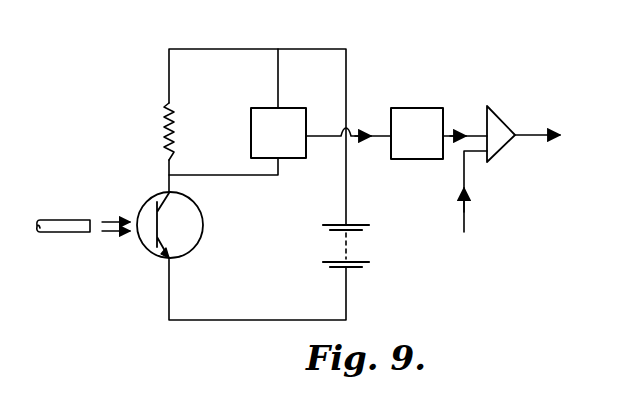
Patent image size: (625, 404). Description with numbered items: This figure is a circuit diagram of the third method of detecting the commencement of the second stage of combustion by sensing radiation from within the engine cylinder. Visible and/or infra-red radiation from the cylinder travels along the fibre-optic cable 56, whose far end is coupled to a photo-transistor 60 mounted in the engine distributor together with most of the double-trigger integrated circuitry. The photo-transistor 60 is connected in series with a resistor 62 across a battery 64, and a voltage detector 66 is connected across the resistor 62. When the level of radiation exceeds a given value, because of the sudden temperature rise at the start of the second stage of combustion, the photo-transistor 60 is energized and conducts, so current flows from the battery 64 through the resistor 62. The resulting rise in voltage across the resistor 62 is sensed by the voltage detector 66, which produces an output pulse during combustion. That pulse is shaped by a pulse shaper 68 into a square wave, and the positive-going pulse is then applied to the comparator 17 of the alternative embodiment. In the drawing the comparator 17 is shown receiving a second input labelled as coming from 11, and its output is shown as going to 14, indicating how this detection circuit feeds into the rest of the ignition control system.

The fibre-optic cable 56 is at (62, 221).
The photo-transistor 60 is at (150, 256).
The resistor 62 is at (165, 134).
The battery 64 is at (356, 248).
The voltage detector 66 is at (288, 125).
The pulse shaper 68 is at (416, 120).
The comparator 17 is at (496, 122).
The input from unit 11 is at (502, 192).
The output to unit 14 is at (545, 151).